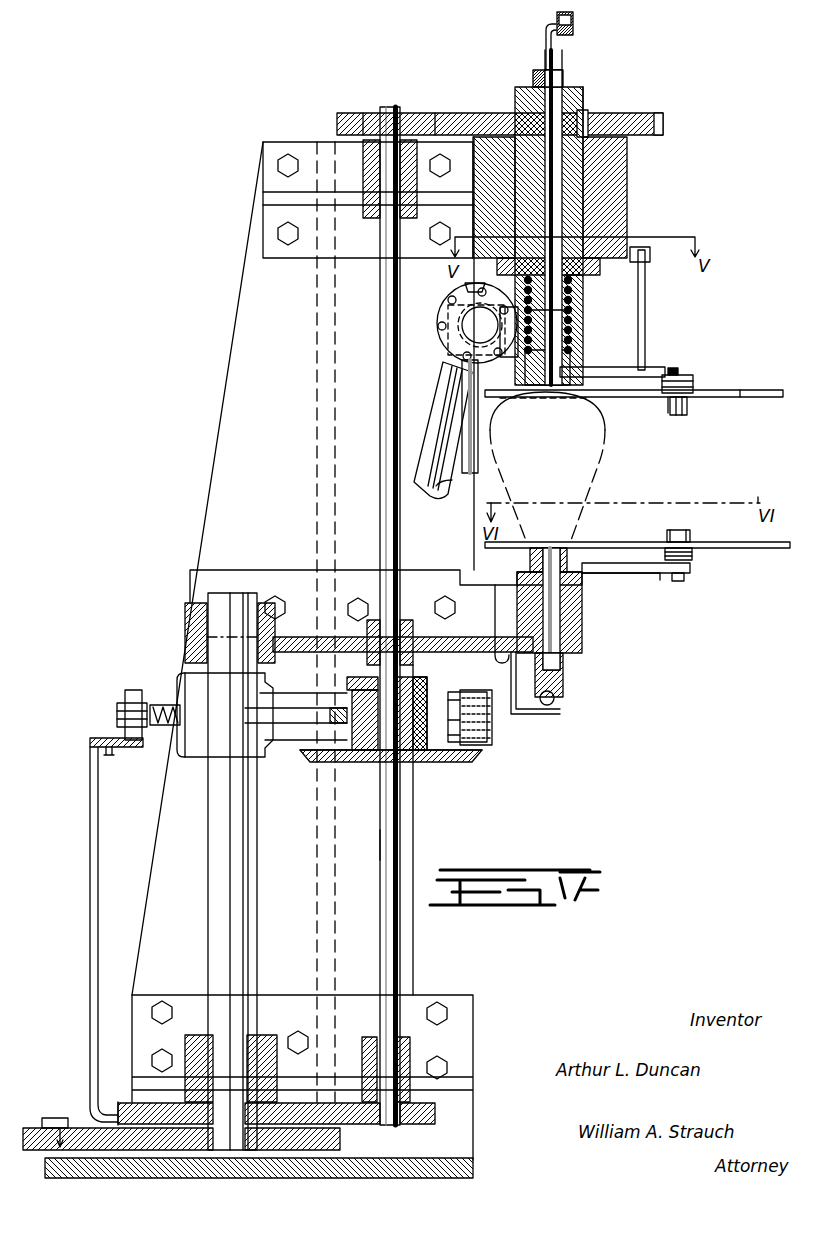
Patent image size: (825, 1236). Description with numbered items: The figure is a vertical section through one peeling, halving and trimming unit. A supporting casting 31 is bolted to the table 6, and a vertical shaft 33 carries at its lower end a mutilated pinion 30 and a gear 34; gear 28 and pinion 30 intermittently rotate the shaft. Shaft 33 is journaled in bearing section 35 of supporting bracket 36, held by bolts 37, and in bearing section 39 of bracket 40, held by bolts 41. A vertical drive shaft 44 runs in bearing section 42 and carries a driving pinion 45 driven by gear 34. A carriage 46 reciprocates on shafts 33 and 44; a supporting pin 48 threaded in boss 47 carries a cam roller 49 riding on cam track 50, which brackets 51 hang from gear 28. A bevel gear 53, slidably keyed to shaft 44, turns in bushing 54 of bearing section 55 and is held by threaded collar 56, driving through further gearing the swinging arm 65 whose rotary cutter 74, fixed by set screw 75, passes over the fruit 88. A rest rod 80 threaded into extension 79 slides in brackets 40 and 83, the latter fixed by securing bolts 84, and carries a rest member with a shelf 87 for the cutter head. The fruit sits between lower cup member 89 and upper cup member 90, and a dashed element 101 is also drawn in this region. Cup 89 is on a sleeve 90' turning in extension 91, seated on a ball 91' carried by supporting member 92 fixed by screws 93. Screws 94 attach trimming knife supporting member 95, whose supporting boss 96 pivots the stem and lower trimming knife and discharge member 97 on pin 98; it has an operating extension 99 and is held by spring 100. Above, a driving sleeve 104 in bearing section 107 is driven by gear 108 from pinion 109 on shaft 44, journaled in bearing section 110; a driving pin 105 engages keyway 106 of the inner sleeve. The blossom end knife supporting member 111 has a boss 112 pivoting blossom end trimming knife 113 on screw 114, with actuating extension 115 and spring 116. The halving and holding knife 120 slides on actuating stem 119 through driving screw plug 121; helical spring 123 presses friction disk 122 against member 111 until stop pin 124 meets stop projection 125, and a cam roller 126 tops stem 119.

The table 6 is at (473, 1160).
The gear 28 is at (45, 1118).
The mutilated pinion 30 is at (342, 1140).
The supporting casting 31 is at (215, 522).
The shaft 33 is at (215, 880).
The gear 34 is at (118, 1100).
The bearing section 35 is at (270, 1035).
The supporting bracket 36 is at (345, 1010).
The bolt 37 is at (162, 1049).
The bearing section 39 is at (200, 603).
The bracket 40 is at (318, 570).
The bolt 41 is at (270, 598).
The bearing section 42 is at (370, 607).
The vertical drive shaft 44 is at (402, 852).
The driving pinion 45 is at (397, 1040).
The carriage 46 is at (285, 757).
The boss 47 is at (165, 705).
The supporting pin 48 is at (117, 708).
The cam roller 49 is at (130, 690).
The cam track 50 is at (90, 742).
The bracket 51 is at (90, 892).
The bevel gear 53 is at (445, 762).
The bushing 54 is at (415, 762).
The bearing section 55 is at (347, 690).
The threaded collar 56 is at (422, 682).
The swinging arm 65 is at (394, 442).
The rotary cutter 74 is at (440, 364).
The set screw 75 is at (450, 303).
The extension 79 is at (490, 742).
The rest rod 80 is at (480, 452).
The bracket 83 is at (298, 142).
The securing bolt 84 is at (282, 232).
The shelf 87 is at (571, 312).
The fruit 88 is at (600, 460).
The lower cup member 89 is at (570, 560).
The upper cup member 90 is at (634, 387).
The sleeve 90' is at (578, 675).
The extension 91 is at (569, 609).
The ball 91' is at (578, 706).
The supporting member 92 is at (570, 650).
The screw 93 is at (497, 650).
The screw 94 is at (582, 585).
The trimming knife supporting member 95 is at (640, 580).
The supporting boss 96 is at (690, 570).
The stem and lower trimming knife and discharge member 97 is at (668, 545).
The pin 98 is at (690, 548).
The operating extension 99 is at (735, 542).
The spring 100 is at (636, 562).
The cone 101 is at (510, 540).
The driving sleeve 104 is at (583, 105).
The driving pin 105 is at (515, 118).
The keyway 106 is at (533, 90).
The bearing section 107 is at (625, 205).
The gear 108 is at (660, 118).
The pinion 109 is at (432, 113).
The bearing section 110 is at (372, 218).
The blossom end knife supporting member 111 is at (615, 367).
The boss 112 is at (693, 380).
The blossom end trimming knife 113 is at (668, 410).
The screw 114 is at (688, 413).
The actuating extension 115 is at (748, 398).
The spring 116 is at (680, 368).
The actuating stem 119 is at (562, 80).
The halving and holding knife 120 is at (575, 405).
The driving screw plug 121 is at (546, 26).
The disk of friction material 122 is at (568, 362).
The helical spring 123 is at (572, 300).
The stop pin 124 is at (646, 322).
The stop projection 125 is at (650, 258).
The cam roller 126 is at (573, 28).